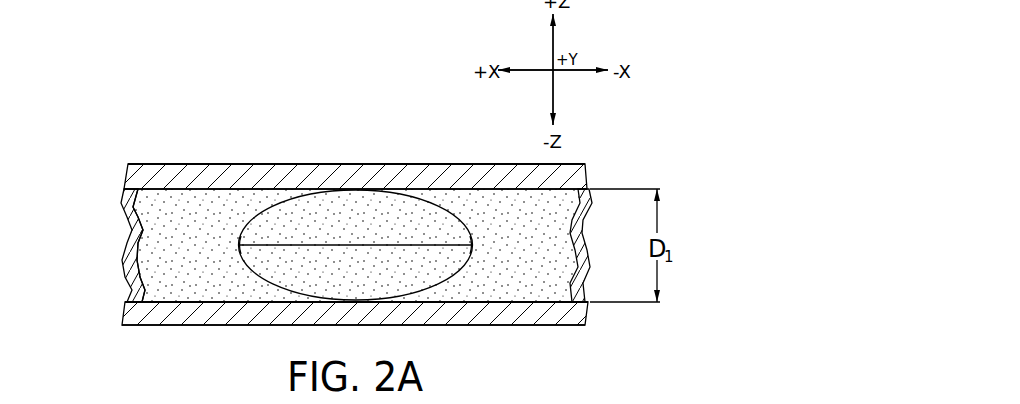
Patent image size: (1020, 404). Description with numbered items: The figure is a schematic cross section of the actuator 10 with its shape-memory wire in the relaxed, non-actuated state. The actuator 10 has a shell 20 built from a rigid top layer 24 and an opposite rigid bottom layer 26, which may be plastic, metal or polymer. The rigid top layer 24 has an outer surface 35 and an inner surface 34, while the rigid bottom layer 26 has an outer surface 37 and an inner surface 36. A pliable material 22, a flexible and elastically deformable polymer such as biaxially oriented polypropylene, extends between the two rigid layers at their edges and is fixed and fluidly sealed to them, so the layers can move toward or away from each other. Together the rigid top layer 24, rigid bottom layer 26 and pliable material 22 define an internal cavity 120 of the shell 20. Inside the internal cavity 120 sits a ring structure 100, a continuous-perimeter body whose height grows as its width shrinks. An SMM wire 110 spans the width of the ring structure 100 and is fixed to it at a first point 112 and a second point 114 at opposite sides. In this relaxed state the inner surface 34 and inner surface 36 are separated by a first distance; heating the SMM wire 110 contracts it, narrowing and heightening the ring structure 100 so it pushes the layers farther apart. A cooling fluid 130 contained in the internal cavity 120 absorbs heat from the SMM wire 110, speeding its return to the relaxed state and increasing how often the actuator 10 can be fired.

The actuator 10 is at (120, 120).
The shell 20 is at (205, 157).
The pliable material 22 is at (127, 240).
The rigid top layer 24 is at (390, 178).
The rigid bottom layer 26 is at (168, 316).
The inner surface of the rigid top layer 34 is at (270, 187).
The outer surface of the rigid top layer 35 is at (310, 165).
The inner surface of the rigid bottom layer 36 is at (273, 303).
The outer surface of the rigid bottom layer 37 is at (447, 325).
The ring structure 100 is at (463, 267).
The SMM wire 110 is at (390, 249).
The first point 112 is at (238, 245).
The second point 114 is at (473, 245).
The internal cavity 120 is at (548, 213).
The cooling fluid 130 is at (148, 260).